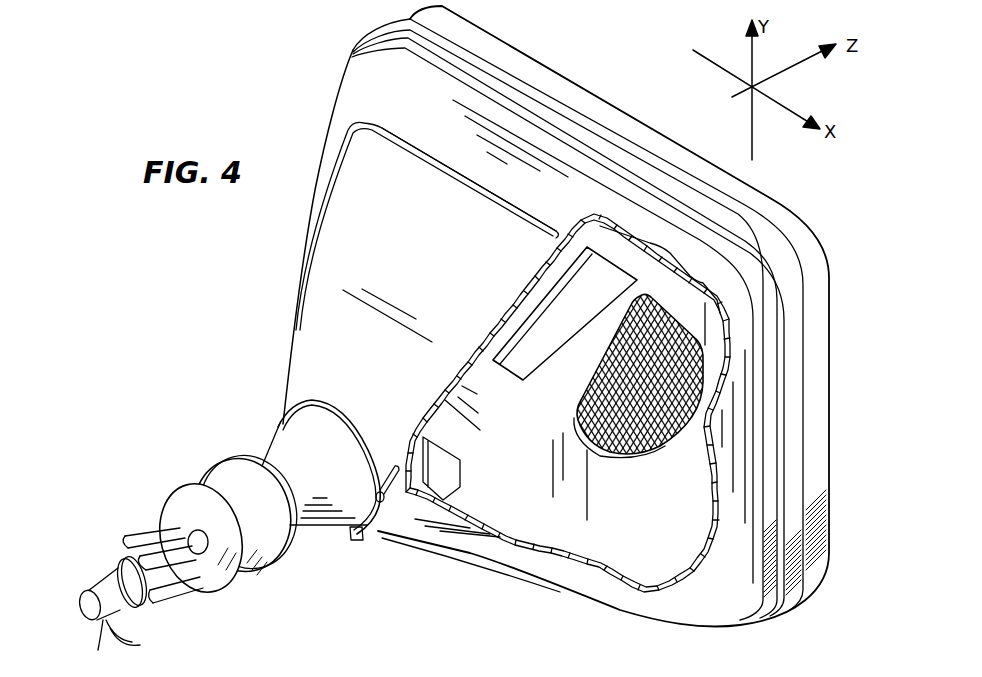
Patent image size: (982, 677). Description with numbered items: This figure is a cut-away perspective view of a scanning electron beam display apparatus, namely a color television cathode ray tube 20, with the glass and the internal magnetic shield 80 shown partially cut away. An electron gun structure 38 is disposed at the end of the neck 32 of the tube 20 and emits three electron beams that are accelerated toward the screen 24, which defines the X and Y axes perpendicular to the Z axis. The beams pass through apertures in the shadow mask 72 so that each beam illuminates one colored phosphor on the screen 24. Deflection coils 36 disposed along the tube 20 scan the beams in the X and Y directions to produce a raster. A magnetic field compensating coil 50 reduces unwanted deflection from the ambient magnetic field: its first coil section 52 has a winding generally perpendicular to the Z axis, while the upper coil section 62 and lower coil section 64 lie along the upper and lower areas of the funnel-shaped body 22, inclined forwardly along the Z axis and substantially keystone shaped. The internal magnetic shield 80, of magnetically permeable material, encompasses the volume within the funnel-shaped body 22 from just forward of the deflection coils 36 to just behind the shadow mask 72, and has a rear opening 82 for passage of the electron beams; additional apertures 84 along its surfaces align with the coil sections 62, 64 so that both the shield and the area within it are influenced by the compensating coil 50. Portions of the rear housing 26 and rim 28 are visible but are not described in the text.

The tube 20 is at (311, 164).
The funnel-shaped body 22 is at (328, 288).
The screen 24 is at (831, 400).
The rear housing portion 26 is at (792, 597).
The front rim flange 28 is at (438, 33).
The neck 32 is at (196, 548).
The deflection coils 36 is at (183, 503).
The electron gun structure 38 is at (84, 604).
The magnetic field compensating coil 50 is at (304, 255).
The first coil section 52 is at (317, 404).
The upper coil section 62 is at (447, 163).
The lower coil section 64 is at (437, 557).
The shadow mask 72 is at (617, 447).
The internal magnetic shield 80 is at (653, 558).
The opening 82 is at (445, 465).
The additional apertures 84 is at (547, 330).